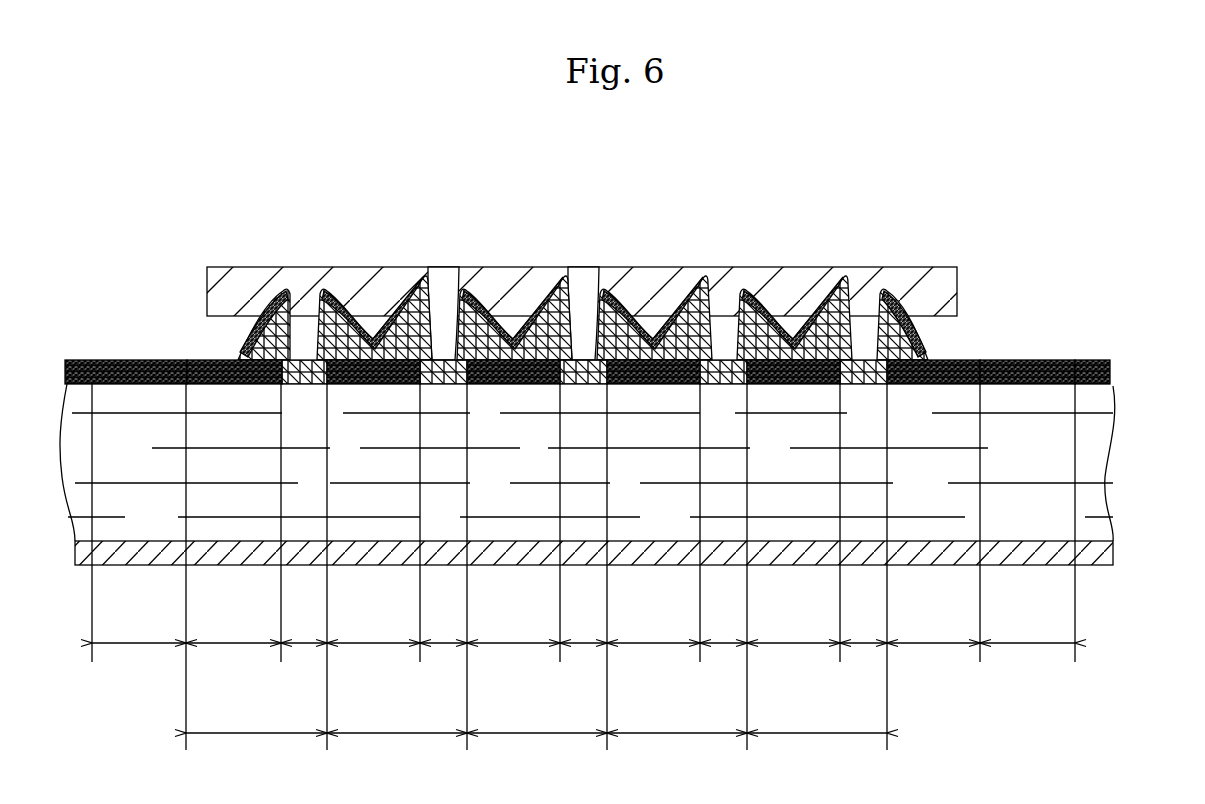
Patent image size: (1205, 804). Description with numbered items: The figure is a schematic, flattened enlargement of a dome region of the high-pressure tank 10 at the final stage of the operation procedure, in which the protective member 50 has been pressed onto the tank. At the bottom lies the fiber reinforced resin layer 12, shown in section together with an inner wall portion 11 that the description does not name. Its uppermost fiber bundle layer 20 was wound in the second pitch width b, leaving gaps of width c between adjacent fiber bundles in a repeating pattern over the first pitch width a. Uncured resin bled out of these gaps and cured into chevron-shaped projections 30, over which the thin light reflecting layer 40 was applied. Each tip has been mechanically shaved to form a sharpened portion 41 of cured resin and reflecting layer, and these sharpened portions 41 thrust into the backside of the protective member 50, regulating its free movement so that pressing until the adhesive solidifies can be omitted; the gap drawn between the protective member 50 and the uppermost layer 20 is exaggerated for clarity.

The high-pressure tank 10 is at (1067, 200).
The tube wall 11 is at (505, 564).
The fiber reinforced resin layer 12 is at (1100, 445).
The uppermost fiber bundle layer 20 is at (1010, 361).
The projection 30 is at (479, 298).
The light reflecting layer 40 is at (788, 333).
The sharpened portion 41 is at (459, 267).
The protective member 50 is at (930, 266).